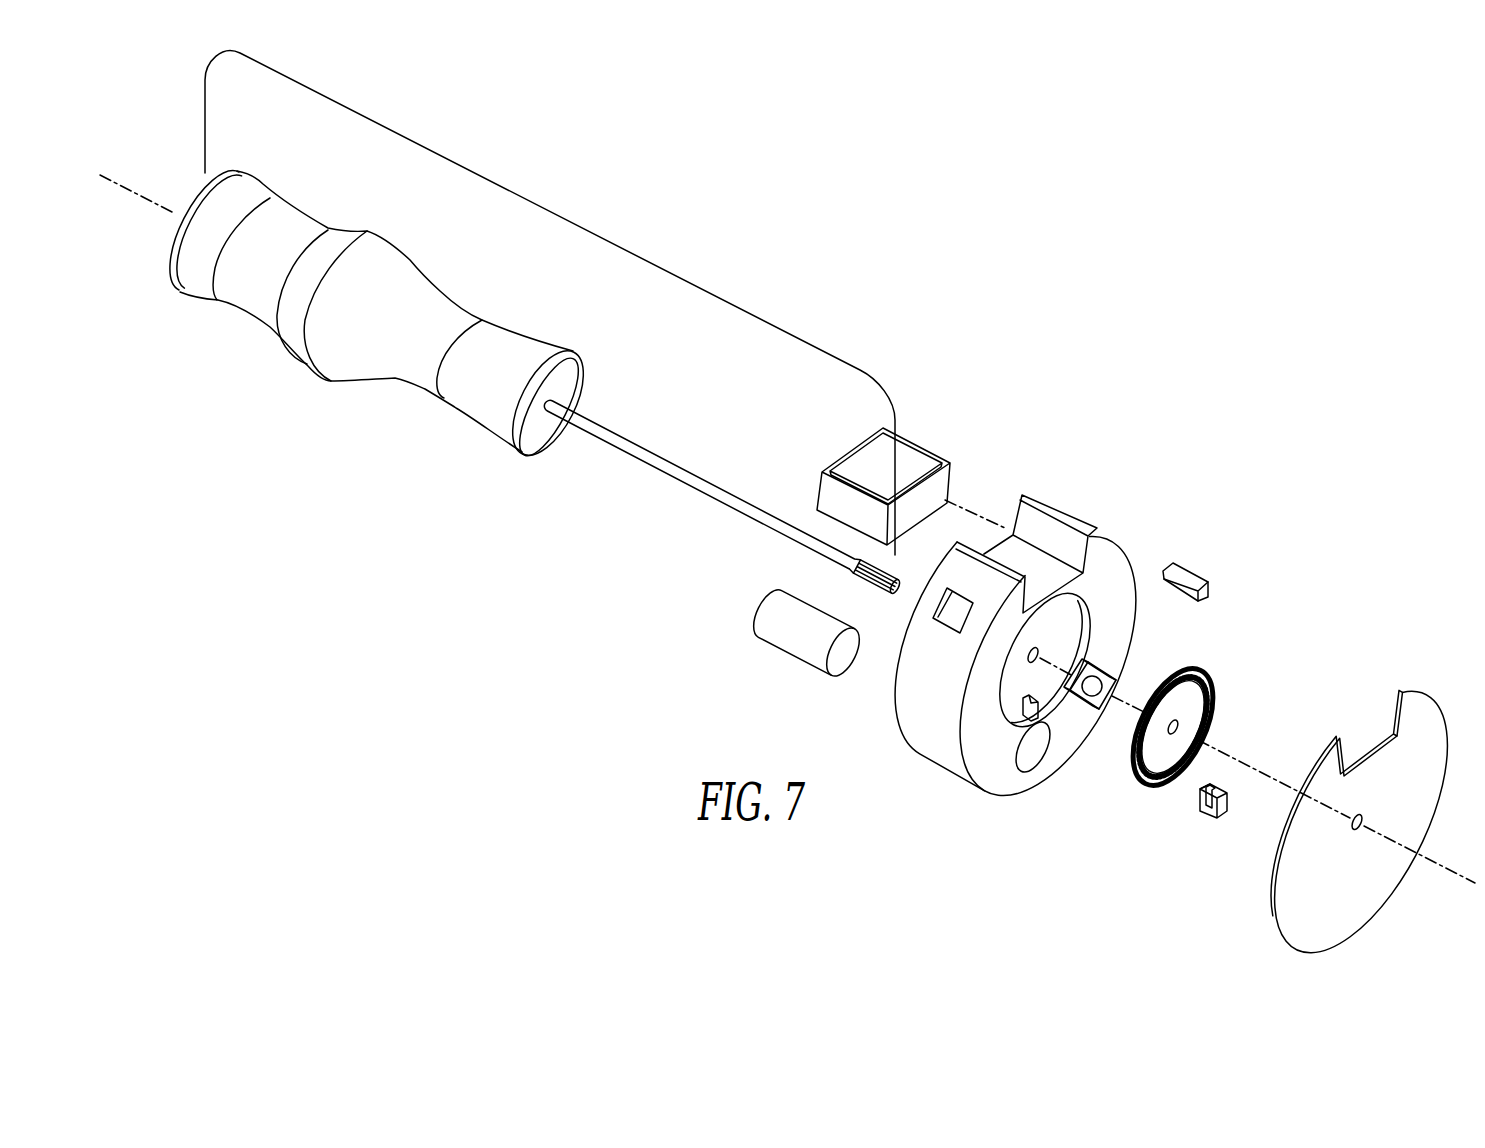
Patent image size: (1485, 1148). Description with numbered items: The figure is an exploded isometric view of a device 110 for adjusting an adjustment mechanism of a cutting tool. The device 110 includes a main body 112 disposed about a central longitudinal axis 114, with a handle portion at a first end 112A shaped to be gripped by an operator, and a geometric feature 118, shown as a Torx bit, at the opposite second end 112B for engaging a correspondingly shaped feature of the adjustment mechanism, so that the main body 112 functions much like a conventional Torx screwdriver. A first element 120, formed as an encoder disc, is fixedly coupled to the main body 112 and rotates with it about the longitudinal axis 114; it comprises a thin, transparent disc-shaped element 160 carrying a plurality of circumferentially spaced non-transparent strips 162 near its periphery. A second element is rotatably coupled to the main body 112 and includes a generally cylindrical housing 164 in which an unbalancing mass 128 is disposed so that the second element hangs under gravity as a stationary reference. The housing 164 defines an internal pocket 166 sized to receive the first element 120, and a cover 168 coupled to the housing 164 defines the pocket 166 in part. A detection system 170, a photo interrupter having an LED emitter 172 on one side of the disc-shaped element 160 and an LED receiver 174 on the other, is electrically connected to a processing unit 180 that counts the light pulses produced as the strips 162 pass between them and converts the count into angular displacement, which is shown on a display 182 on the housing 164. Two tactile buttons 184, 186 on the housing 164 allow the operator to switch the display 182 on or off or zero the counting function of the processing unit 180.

The device 110 is at (970, 275).
The main body 112 is at (562, 213).
The first end 112A is at (180, 187).
The second end 112B is at (898, 592).
The central longitudinal axis 114 is at (1438, 862).
The geometric feature 118 is at (897, 581).
The first element 120 is at (1188, 708).
The unbalancing mass 128 is at (788, 630).
The disc-shaped element 160 is at (1148, 757).
The non-transparent strips 162 is at (1213, 700).
The housing 164 is at (1020, 610).
The internal pocket 166 is at (1027, 673).
The cover 168 is at (1262, 895).
The detection system 170 is at (1190, 833).
The LED emitter 172 is at (1223, 803).
The LED receiver 174 is at (1200, 795).
The processing unit 180 is at (901, 465).
The display 182 is at (880, 450).
The tactile button 184 is at (1103, 660).
The tactile button 186 is at (1197, 567).